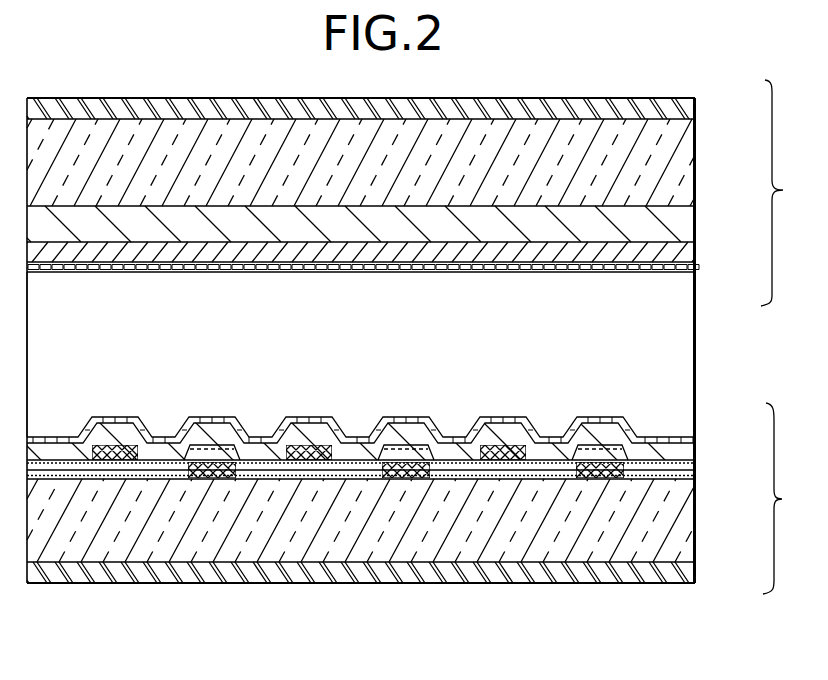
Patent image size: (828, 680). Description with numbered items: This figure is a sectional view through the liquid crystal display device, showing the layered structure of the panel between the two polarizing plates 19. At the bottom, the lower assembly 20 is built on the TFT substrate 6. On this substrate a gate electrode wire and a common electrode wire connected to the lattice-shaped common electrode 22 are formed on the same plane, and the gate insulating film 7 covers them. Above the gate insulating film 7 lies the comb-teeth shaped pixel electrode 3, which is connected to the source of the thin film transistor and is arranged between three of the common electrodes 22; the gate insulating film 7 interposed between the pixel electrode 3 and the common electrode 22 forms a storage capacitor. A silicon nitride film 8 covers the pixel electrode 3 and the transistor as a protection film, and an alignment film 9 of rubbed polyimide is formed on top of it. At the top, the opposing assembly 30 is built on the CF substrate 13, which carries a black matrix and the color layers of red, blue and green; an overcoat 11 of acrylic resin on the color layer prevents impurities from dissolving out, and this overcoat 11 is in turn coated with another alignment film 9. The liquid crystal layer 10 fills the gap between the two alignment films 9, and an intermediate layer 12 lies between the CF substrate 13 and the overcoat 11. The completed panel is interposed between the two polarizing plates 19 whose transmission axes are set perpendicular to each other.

The pixel electrode 3 is at (308, 455).
The TFT substrate 6 is at (685, 533).
The gate insulating film 7 is at (695, 472).
The silicon nitride film 8 is at (687, 450).
The alignment film 9 is at (695, 265).
The liquid crystal layer 10 is at (685, 352).
The overcoat 11 is at (685, 252).
The color filter layer 12 is at (685, 227).
The CF substrate 13 is at (690, 152).
The polarizing plates 19 is at (707, 101).
The lower substrate (TFT substrate) 20 is at (791, 498).
The common electrode 22 is at (210, 472).
The upper substrate (counter substrate) 30 is at (791, 193).